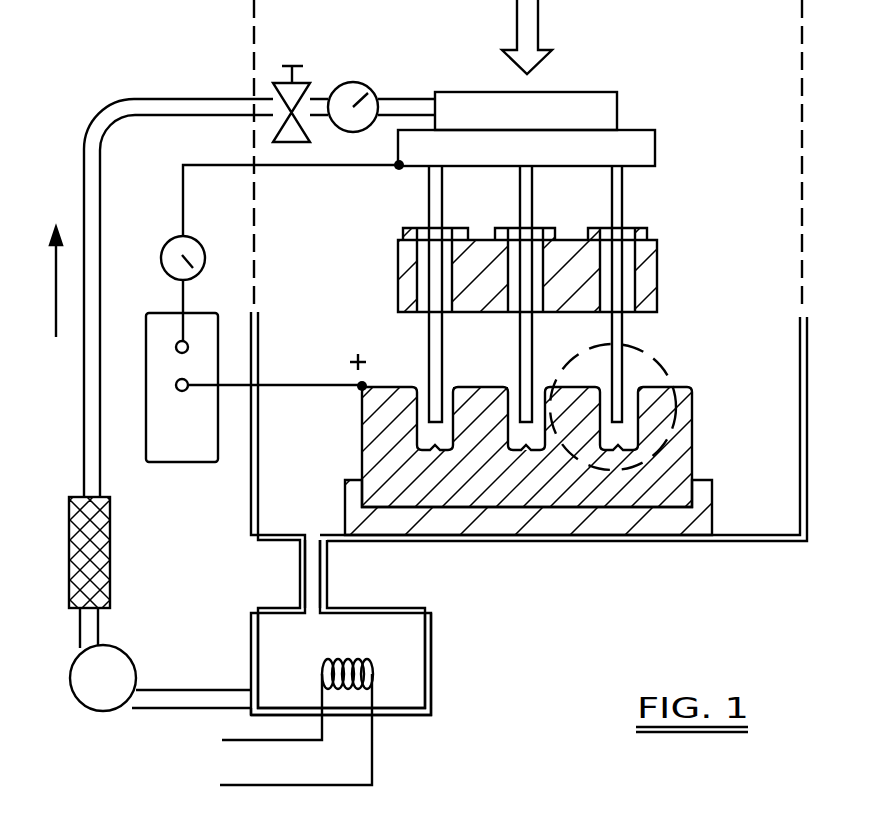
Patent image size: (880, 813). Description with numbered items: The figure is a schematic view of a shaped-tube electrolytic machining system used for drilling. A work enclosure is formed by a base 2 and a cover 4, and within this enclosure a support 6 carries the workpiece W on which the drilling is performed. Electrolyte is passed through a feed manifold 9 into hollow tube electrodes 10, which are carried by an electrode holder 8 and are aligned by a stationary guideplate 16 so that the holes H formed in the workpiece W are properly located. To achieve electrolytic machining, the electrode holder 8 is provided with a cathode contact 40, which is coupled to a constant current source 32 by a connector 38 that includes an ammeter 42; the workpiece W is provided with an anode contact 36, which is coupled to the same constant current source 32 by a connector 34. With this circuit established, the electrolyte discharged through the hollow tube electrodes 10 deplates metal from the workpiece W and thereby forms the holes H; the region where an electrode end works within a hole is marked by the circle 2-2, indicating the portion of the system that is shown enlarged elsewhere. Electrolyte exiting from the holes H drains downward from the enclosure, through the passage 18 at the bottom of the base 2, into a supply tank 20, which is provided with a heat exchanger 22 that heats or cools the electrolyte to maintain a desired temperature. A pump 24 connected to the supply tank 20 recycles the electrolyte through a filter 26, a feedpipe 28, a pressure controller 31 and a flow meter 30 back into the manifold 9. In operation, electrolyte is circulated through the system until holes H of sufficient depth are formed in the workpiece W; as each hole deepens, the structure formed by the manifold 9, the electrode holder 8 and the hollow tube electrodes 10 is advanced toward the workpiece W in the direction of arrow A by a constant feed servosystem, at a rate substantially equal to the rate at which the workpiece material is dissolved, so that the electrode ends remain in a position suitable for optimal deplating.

The base 2 is at (807, 476).
The cover 4 is at (803, 48).
The support 6 is at (423, 522).
The electrode holder 8 is at (655, 152).
The feed manifold 9 is at (617, 110).
The hollow tube electrodes 10 is at (442, 215).
The stationary guideplate 16 is at (658, 270).
The passage 18 is at (303, 572).
The supply tank 20 is at (432, 650).
The heat exchanger 22 is at (373, 754).
The pump 24 is at (124, 655).
The filter 26 is at (110, 545).
The feedpipe 28 is at (84, 410).
The flow meter 30 is at (360, 83).
The pressure controller 31 is at (296, 81).
The constant current source 32 is at (168, 313).
The connector 34 is at (275, 386).
The anode contact 36 is at (364, 385).
The connector 38 is at (272, 166).
The cathode contact 40 is at (412, 183).
The ammeter 42 is at (182, 236).
The arrow A is at (538, 22).
The holes H is at (478, 395).
The workpiece W is at (692, 432).
The circle 2-2 is at (664, 366).